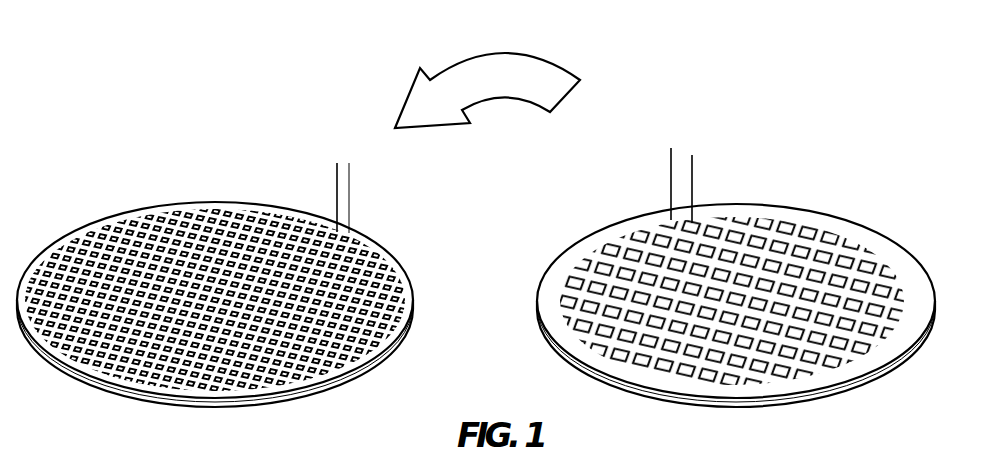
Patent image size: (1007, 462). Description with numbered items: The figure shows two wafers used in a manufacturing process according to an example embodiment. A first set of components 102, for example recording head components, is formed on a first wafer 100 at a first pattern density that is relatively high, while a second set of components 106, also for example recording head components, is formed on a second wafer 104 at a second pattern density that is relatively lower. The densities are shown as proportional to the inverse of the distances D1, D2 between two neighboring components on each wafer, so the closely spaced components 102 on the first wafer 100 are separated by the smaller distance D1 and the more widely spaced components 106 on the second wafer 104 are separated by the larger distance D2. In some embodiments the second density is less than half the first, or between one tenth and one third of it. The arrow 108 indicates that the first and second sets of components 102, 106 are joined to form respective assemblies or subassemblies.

The first wafer 100 is at (143, 209).
The first set of components 102 is at (253, 210).
The second wafer 104 is at (618, 223).
The second set of components 106 is at (800, 230).
The arrow 108 is at (482, 62).
The distance between two components on the first wafer D1 is at (392, 190).
The distance between two components on the second wafer D2 is at (733, 182).